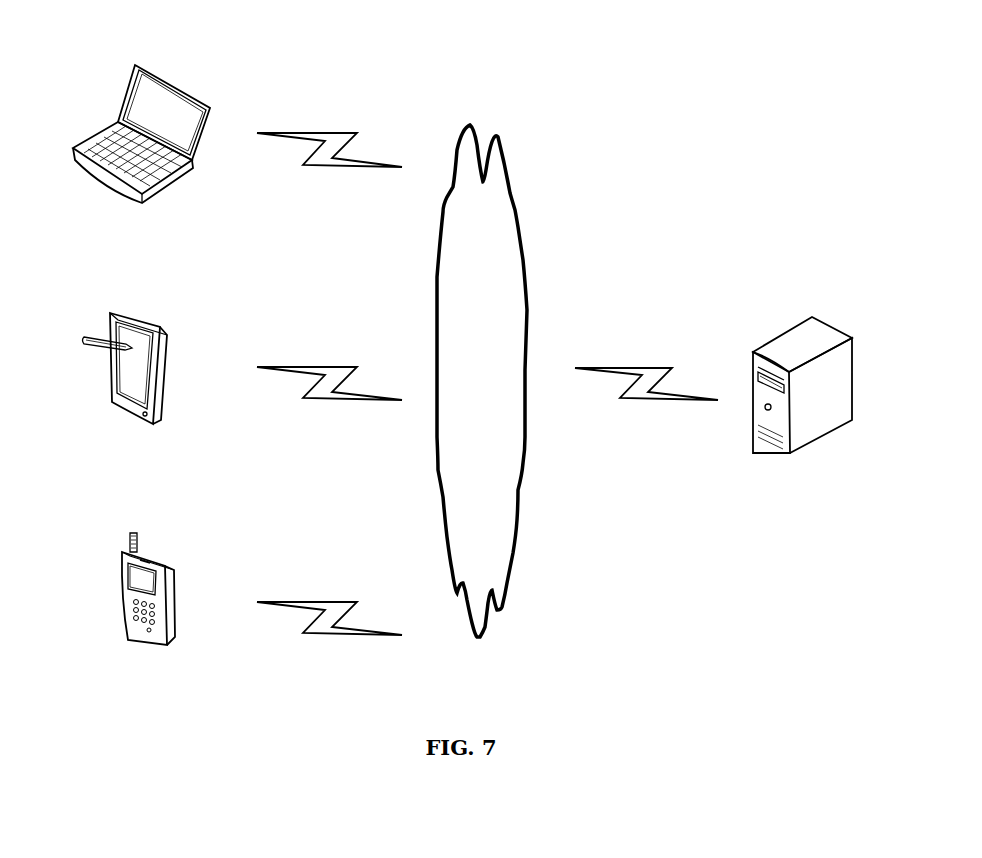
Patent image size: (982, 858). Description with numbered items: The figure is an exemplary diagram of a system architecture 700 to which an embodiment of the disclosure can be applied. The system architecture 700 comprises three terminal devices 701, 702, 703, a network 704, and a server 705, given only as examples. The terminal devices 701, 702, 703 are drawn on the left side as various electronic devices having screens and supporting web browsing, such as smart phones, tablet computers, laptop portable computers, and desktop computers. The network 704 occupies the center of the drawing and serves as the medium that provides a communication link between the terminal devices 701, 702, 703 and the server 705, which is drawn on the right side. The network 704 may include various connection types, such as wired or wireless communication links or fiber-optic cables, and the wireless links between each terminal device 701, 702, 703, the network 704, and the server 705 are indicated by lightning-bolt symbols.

The system architecture 700 is at (746, 60).
The terminal device 701 is at (148, 607).
The terminal device 702 is at (125, 390).
The terminal device 703 is at (141, 152).
The network 704 is at (482, 381).
The server 705 is at (802, 405).